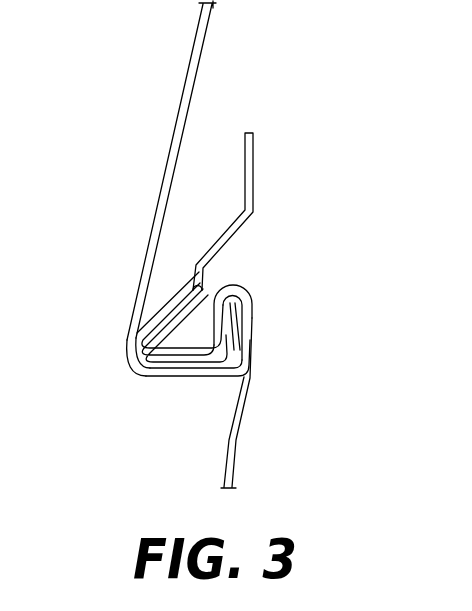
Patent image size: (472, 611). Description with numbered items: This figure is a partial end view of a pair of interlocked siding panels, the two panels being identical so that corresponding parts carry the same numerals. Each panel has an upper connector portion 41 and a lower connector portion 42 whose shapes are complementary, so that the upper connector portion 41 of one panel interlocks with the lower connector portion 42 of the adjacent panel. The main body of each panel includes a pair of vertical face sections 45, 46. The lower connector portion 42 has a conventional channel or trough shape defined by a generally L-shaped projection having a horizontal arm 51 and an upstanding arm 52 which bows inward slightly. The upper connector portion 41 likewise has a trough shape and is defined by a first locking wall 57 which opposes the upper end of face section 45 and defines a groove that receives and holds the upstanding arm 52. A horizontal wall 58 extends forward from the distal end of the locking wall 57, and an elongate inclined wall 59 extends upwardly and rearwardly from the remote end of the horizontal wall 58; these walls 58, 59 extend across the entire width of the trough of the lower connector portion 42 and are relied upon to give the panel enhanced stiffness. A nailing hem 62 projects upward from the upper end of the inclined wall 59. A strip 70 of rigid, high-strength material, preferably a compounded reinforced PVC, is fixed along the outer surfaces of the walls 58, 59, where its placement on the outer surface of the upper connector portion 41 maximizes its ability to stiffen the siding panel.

The upper connector portion 41 is at (250, 294).
The lower connector portion 42 is at (124, 375).
The face section 45 is at (242, 443).
The face section 46 is at (186, 70).
The horizontal arm 51 is at (220, 378).
The upstanding arm 52 is at (242, 320).
The first locking wall 57 is at (210, 320).
The horizontal wall 58 is at (190, 345).
The inclined wall 59 is at (193, 295).
The nailing hem 62 is at (228, 170).
The strip 70 is at (165, 290).